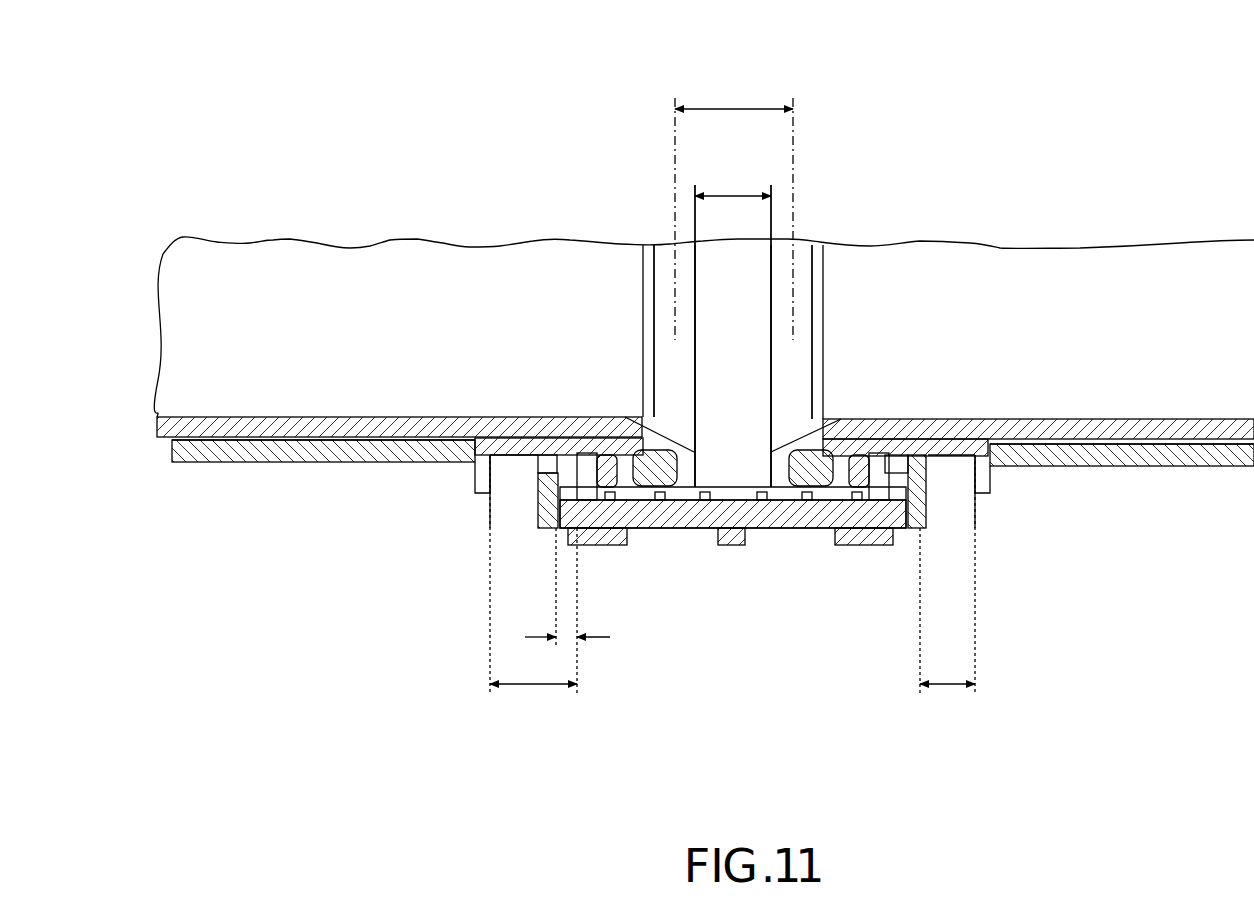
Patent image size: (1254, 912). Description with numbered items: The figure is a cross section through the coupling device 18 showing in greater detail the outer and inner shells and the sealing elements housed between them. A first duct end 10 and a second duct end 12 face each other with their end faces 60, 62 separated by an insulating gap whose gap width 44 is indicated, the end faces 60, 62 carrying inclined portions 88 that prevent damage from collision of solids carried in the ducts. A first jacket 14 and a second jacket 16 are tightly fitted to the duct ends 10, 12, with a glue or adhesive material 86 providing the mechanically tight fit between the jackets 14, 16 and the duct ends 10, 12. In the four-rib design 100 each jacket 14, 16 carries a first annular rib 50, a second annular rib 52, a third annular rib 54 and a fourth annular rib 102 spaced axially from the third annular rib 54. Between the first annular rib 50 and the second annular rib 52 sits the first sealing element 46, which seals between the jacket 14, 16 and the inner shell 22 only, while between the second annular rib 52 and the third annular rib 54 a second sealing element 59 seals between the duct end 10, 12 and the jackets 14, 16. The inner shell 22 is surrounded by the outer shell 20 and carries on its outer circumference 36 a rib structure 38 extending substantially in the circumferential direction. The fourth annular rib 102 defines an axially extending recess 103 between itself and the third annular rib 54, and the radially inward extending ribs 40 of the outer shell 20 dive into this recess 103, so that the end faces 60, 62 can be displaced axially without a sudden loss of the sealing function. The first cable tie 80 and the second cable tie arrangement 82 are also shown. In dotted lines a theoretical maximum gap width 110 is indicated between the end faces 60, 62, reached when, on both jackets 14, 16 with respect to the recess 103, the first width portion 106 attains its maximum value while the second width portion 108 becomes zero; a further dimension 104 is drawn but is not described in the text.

The first duct end 10 is at (217, 442).
The second duct end 12 is at (1100, 442).
The first jacket 14 is at (278, 463).
The second jacket 16 is at (1170, 467).
The coupling device 18 is at (672, 715).
The outer shell 20 is at (730, 550).
The inner shell 22 is at (735, 482).
The outer circumference 36 is at (780, 503).
The rib structure 38 is at (672, 503).
The radially inward extending ribs 40 is at (522, 468).
The gap width 44 is at (735, 547).
The first sealing element 46 is at (650, 468).
The first annular rib 50 is at (703, 417).
The second annular rib 52 is at (628, 530).
The third annular rib 54 is at (578, 468).
The second sealing element 59 is at (607, 468).
The end face of first duct end 60 is at (677, 303).
The end face of second duct end 62 is at (773, 253).
The first cable tie 80 is at (603, 547).
The second cable tie arrangement 82 is at (863, 546).
The glue or adhesive material 86 is at (335, 440).
The inclined portions 88 is at (678, 417).
The four-rib design 100 is at (912, 347).
The fourth annular rib 102 is at (483, 488).
The axially extending recess 103 is at (507, 463).
The first width 104 is at (532, 693).
The first width portion 106 is at (945, 693).
The second width portion 108 is at (570, 640).
The theoretical maximum gap width 110 is at (732, 108).